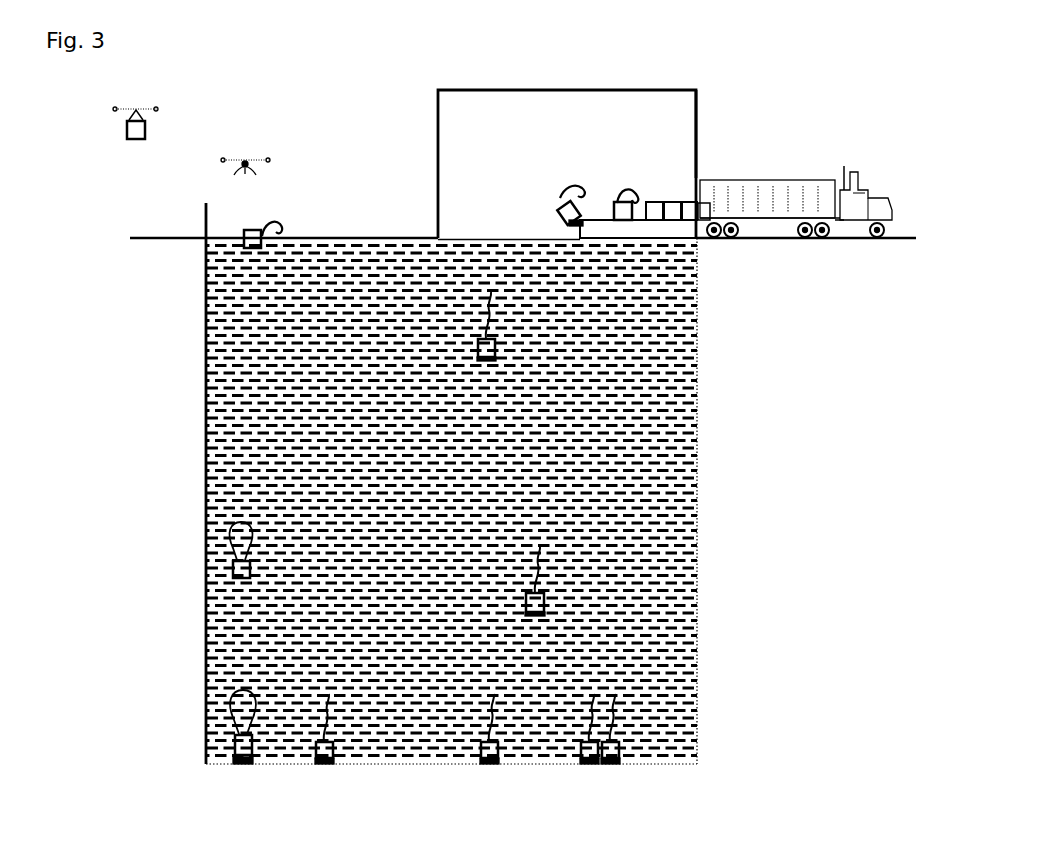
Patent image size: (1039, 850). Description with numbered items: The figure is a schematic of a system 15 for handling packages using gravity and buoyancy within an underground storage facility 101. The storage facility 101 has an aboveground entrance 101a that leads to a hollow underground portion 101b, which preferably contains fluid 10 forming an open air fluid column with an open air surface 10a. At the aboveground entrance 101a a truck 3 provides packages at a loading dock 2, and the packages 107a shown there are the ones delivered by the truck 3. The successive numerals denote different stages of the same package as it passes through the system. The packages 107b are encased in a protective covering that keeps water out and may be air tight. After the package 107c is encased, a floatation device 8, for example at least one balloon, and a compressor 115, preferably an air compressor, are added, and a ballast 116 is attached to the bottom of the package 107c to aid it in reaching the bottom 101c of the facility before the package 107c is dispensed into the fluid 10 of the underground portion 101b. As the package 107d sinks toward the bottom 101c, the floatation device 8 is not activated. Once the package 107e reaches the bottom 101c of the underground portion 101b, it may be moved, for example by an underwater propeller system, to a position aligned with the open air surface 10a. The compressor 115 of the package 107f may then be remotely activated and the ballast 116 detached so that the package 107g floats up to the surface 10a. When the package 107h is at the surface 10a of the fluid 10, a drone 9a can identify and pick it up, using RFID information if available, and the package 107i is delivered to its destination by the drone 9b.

The loading dock 2 is at (672, 214).
The truck 3 is at (778, 190).
The floatation device 8 is at (268, 224).
The drone 9a is at (243, 152).
The drone 9b is at (156, 104).
The fluid 10 is at (215, 316).
The open air surface 10a is at (370, 228).
The system 15 is at (357, 99).
The storage facility 101 is at (513, 81).
The aboveground entrance 101a is at (690, 108).
The underground portion 101b is at (690, 336).
The bottom 101c is at (405, 757).
The package 107a is at (692, 198).
The package 107b is at (648, 194).
The package 107c is at (548, 196).
The package 107d is at (487, 341).
The package 107e is at (617, 740).
The package 107f is at (226, 736).
The package 107g is at (225, 561).
The package 107h is at (236, 231).
The package 107i is at (130, 132).
The compressor 115 is at (606, 194).
The ballast 116 is at (560, 216).